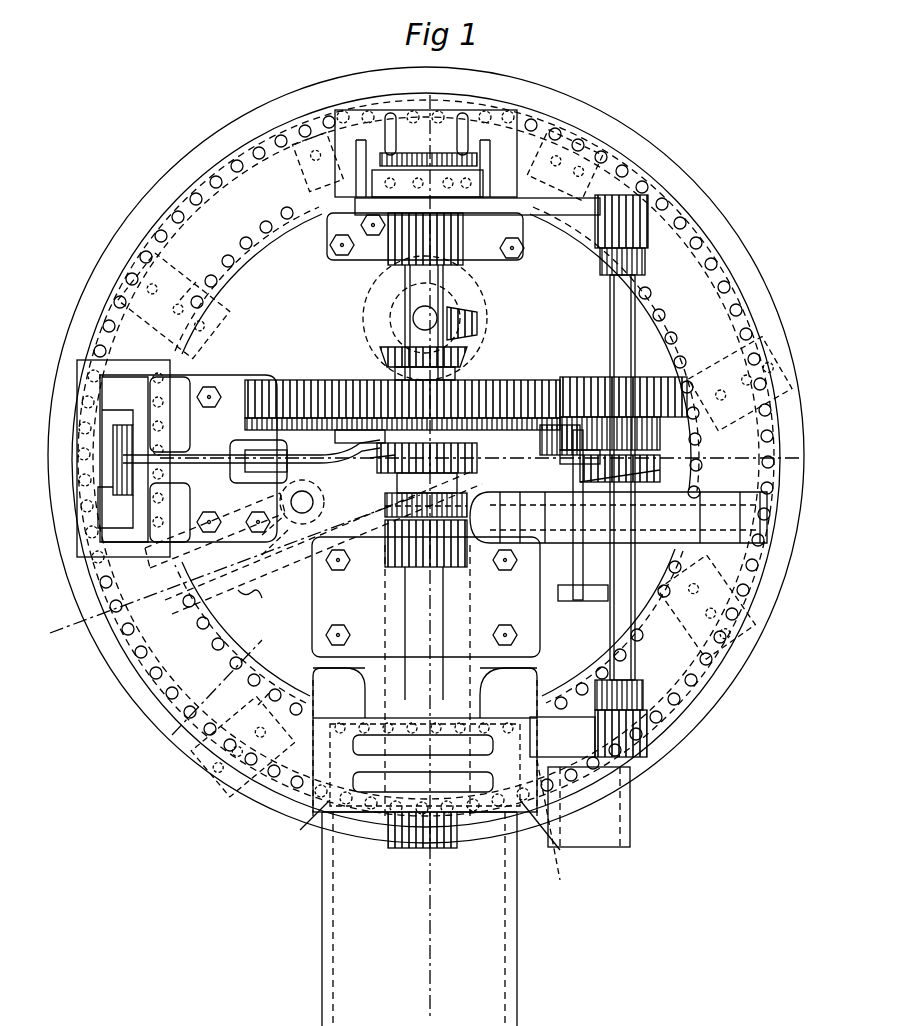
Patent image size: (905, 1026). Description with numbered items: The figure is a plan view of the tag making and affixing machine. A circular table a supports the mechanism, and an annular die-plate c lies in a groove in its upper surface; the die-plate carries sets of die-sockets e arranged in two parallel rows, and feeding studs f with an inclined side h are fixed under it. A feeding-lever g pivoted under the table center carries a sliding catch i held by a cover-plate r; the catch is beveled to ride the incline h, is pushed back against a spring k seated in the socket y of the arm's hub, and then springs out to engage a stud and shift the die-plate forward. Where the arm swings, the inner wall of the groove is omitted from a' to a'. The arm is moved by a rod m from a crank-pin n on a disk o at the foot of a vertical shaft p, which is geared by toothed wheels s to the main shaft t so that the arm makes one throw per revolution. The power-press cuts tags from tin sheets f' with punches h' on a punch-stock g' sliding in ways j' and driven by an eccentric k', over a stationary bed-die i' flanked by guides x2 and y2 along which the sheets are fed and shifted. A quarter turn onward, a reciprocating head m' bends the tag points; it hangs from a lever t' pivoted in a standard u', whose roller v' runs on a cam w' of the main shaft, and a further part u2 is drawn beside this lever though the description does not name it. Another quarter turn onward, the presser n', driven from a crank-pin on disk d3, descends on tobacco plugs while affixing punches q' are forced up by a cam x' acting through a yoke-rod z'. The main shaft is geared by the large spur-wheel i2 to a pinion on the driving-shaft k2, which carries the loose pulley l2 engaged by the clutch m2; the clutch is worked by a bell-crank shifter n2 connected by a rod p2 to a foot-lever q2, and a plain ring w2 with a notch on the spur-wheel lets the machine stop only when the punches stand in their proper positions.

The circular table a is at (426, 455).
The end of inner wall opening a' is at (351, 678).
The annular die-plate c is at (450, 455).
The die-sockets e is at (236, 808).
The feeding studs f is at (455, 463).
The inclined side h is at (226, 497).
The affixing punches q' is at (426, 121).
The presser n' is at (442, 105).
The disk d3 is at (415, 158).
The main shaft t is at (463, 289).
The disk o is at (480, 305).
The vertical shaft p is at (414, 308).
The toothed wheels s is at (482, 362).
The crank-pin n is at (407, 360).
The large spur-wheel i2 is at (578, 372).
The roller v' is at (446, 456).
The cam w' is at (452, 479).
The cam x' is at (433, 495).
The driving-shaft k2 is at (489, 505).
The yoke-rod z' is at (427, 506).
The punch-stock g' is at (425, 740).
The punches h' is at (424, 709).
The eccentric k' is at (401, 830).
The tin sheets f' is at (419, 919).
The bed-die i' is at (425, 682).
The guide x2 is at (320, 680).
The ways j' is at (349, 723).
The housing edge j'' is at (559, 851).
The guide y2 is at (554, 771).
The foot-lever q2 is at (589, 807).
The rod p2 is at (590, 600).
The bell-crank shifter n2 is at (575, 560).
The clutch m2 is at (640, 458).
The loose pulley l2 is at (618, 517).
The plain ring w2 is at (551, 442).
The reciprocating head m' is at (105, 458).
The lever t' is at (240, 458).
The standard u' is at (258, 468).
The clamp u2 is at (345, 436).
The spring k is at (302, 518).
The rod m is at (323, 535).
The sliding catch i is at (215, 532).
The feeding-lever g is at (278, 547).
The cover-plate r is at (250, 591).
The socket y is at (376, 450).